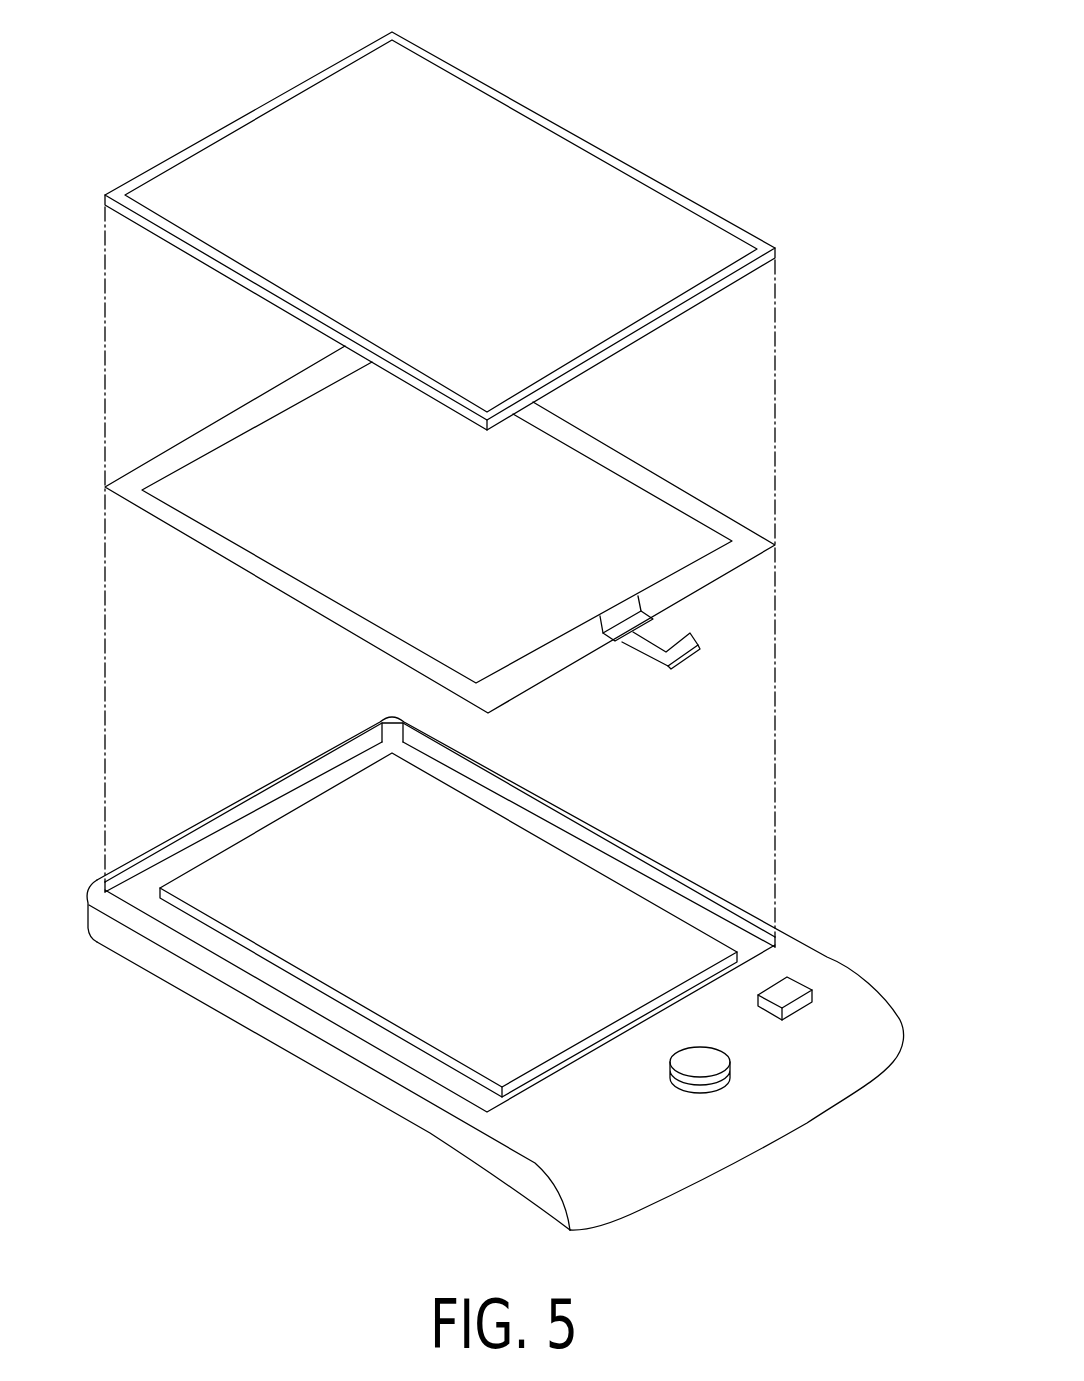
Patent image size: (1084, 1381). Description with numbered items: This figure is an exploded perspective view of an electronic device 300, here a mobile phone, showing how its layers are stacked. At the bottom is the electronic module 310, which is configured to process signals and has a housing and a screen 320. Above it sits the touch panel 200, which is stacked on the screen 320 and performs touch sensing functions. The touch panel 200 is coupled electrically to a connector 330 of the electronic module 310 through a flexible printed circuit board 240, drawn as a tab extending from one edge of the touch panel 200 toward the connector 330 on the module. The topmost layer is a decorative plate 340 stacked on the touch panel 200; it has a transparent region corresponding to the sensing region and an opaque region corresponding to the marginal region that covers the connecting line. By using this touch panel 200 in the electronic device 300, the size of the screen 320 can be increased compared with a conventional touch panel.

The electronic device 300 is at (757, 41).
The decorative plate 340 is at (603, 180).
The touch panel 200 is at (645, 415).
The flexible printed circuit board 240 is at (680, 648).
The electronic module 310 is at (605, 835).
The screen 320 is at (475, 815).
The connector 330 is at (792, 990).